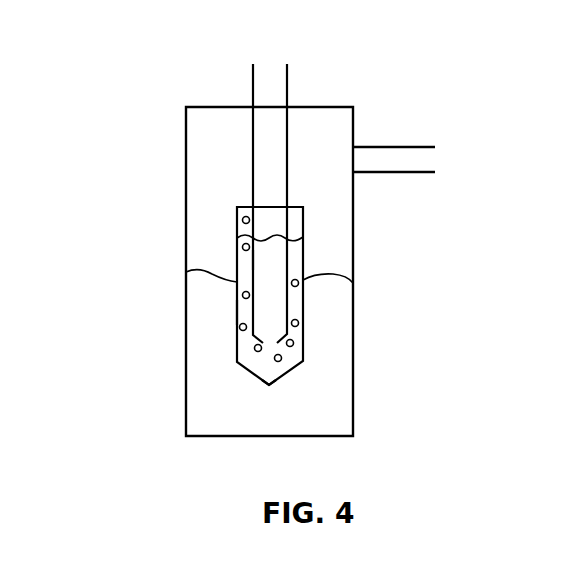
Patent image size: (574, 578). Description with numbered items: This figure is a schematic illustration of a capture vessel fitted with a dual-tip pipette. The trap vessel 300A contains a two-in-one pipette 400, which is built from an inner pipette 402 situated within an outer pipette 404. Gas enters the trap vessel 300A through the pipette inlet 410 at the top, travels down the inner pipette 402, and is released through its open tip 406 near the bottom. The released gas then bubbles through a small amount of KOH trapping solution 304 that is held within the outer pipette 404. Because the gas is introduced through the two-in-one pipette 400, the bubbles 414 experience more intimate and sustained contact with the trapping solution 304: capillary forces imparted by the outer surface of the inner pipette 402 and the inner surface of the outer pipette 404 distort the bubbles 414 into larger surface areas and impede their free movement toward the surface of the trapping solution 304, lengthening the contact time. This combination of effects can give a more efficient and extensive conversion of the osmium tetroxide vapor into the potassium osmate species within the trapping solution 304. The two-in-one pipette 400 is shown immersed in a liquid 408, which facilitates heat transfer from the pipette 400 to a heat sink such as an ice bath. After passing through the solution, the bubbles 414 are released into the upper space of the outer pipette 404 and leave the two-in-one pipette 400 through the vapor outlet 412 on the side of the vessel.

The trap vessel 300A is at (168, 160).
The pipette inlet 410 is at (263, 78).
The vapor outlet 412 is at (420, 163).
The two-in-one pipette 400 is at (317, 240).
The inner pipette 402 is at (253, 258).
The outer pipette 404 is at (237, 312).
The KOH trapping solution 304 is at (250, 355).
The bubbles 414 is at (295, 323).
The open tip 406 is at (269, 347).
The liquid 408 is at (216, 394).